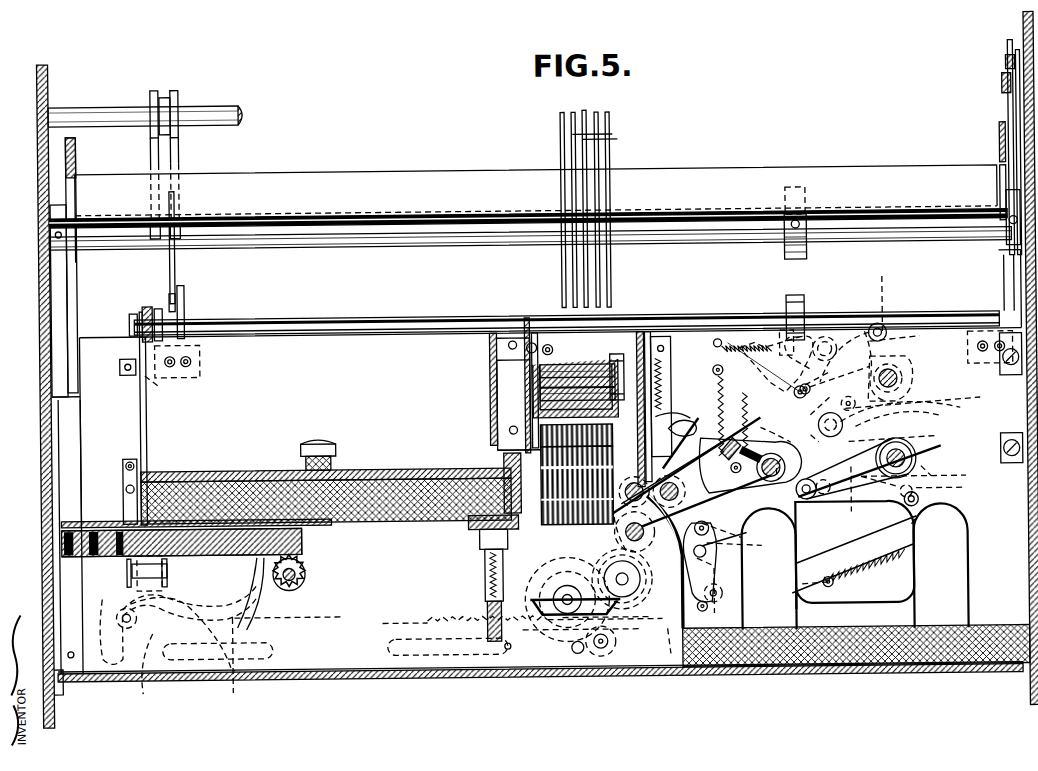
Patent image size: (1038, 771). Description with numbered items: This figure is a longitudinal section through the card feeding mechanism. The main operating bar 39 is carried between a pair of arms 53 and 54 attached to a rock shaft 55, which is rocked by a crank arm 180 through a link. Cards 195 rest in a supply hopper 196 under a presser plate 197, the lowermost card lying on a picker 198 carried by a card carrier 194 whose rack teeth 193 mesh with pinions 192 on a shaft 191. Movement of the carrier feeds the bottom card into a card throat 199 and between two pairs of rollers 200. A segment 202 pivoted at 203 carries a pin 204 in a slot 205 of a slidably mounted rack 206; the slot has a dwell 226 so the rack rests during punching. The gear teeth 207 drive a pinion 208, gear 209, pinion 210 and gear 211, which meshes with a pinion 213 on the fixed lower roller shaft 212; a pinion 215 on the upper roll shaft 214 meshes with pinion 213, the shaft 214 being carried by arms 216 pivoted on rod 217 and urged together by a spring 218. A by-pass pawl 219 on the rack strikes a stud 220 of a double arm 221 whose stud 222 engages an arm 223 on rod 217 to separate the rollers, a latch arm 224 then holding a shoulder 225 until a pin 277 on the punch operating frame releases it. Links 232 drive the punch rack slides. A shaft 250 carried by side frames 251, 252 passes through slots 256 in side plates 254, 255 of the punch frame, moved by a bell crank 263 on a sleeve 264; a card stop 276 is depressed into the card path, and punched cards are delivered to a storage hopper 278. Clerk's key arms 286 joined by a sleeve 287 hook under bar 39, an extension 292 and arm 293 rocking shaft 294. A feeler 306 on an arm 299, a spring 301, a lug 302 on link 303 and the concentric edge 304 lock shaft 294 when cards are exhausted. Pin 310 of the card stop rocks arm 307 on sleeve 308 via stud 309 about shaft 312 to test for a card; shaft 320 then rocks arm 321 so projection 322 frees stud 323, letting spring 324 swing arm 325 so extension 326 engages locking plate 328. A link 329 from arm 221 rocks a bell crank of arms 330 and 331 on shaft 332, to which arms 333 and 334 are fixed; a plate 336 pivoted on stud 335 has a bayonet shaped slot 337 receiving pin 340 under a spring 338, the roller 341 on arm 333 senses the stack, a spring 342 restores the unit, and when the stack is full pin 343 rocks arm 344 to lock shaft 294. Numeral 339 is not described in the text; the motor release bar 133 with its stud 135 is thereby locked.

The bar 39 is at (308, 182).
The arm 53 is at (80, 280).
The arm 54 is at (1002, 148).
The rock shaft 55 is at (640, 228).
The motor release bar 133 is at (1010, 65).
The stud 135 is at (1004, 88).
The crank arm 180 is at (786, 265).
The shaft 191 is at (295, 580).
The pinions 192 is at (305, 572).
The rack teeth 193 is at (260, 594).
The card carrier 194 is at (300, 545).
The cards 195 is at (380, 475).
The supply hopper 196 is at (236, 430).
The presser plate 197 is at (205, 468).
The picker 198 is at (108, 517).
The card throat 199 is at (480, 520).
The rollers 200 is at (628, 484).
The segment 202 is at (253, 666).
The pivot 203 is at (225, 500).
The pin 204 is at (118, 608).
The slot 205 is at (140, 690).
The rack 206 is at (378, 625).
The gear teeth 207 is at (448, 618).
The pinion 208 is at (550, 595).
The gear 209 is at (558, 575).
The pinion 210 is at (610, 562).
The gear 211 is at (640, 606).
The shaft 212 is at (644, 545).
The pinion 213 is at (648, 575).
The shaft 214 is at (674, 484).
The pinion 215 is at (603, 437).
The arms 216 is at (700, 485).
The rod 217 is at (729, 520).
The spring 218 is at (752, 413).
The by-pass pawl 219 is at (668, 668).
The stud 220 is at (715, 608).
The double arm 221 is at (730, 555).
The stud 222 is at (715, 536).
The arm 223 is at (710, 528).
The latch arm 224 is at (680, 428).
The shoulder 225 is at (695, 455).
The dwell 226 is at (170, 600).
The link 232 is at (612, 142).
The shaft 250 is at (533, 332).
The side frame 251 is at (490, 350).
The side frame 252 is at (652, 335).
The side plate 254 is at (497, 408).
The side plate 255 is at (645, 385).
The slot 256 is at (518, 340).
The bell crank 263 is at (550, 385).
The sleeve 264 is at (577, 382).
The card stop 276 is at (660, 365).
The pin 277 is at (576, 388).
The storage hopper 278 is at (844, 564).
The arm 286 is at (157, 87).
The sleeve 287 is at (168, 92).
The extension 292 is at (176, 265).
The arm 293 is at (186, 305).
The rock shaft 294 is at (250, 316).
The arm 299 is at (125, 568).
The spring 301 is at (122, 470).
The lug 302 is at (158, 380).
The link 303 is at (130, 322).
The concentric edge 304 is at (150, 303).
The feeler 306 is at (166, 572).
The arm 307 is at (770, 434).
The sleeve 308 is at (792, 458).
The stud 309 is at (732, 412).
The pin 310 is at (660, 415).
The shaft 312 is at (750, 471).
The shaft 320 is at (898, 384).
The arm 321 is at (912, 365).
The projection 322 is at (905, 346).
The stud 323 is at (883, 295).
The spring 324 is at (740, 340).
The arm 325 is at (868, 328).
The extension 326 is at (770, 365).
The locking plate 328 is at (798, 300).
The link 329 is at (915, 538).
The arm 330 is at (908, 473).
The arm 331 is at (889, 494).
The shaft 332 is at (912, 458).
The arm 333 is at (826, 497).
The arm 334 is at (900, 433).
The stud 335 is at (843, 498).
The plate 336 is at (890, 410).
The bayonet shaped slot 337 is at (835, 379).
The spring 338 is at (822, 438).
The pin 339 is at (933, 487).
The pin 340 is at (900, 409).
The roller 341 is at (801, 499).
The spring 342 is at (880, 558).
The pin 343 is at (915, 397).
The arm 344 is at (825, 360).